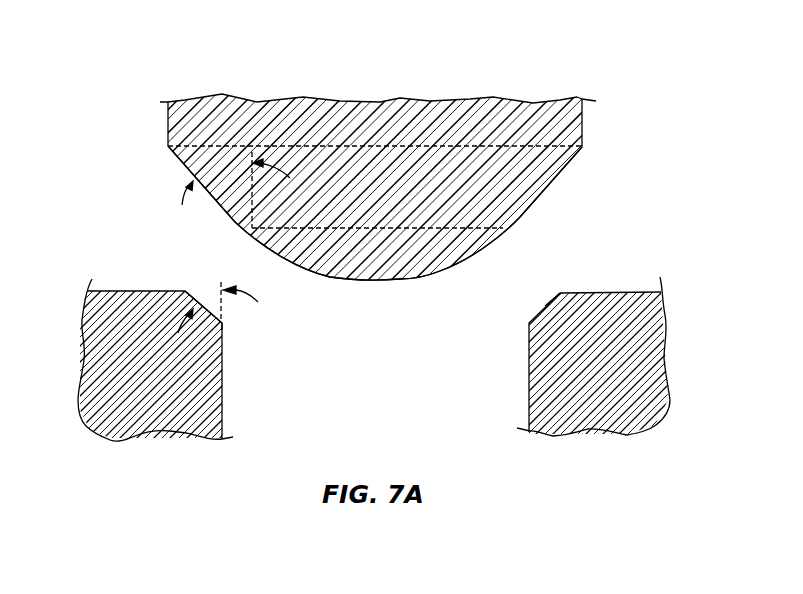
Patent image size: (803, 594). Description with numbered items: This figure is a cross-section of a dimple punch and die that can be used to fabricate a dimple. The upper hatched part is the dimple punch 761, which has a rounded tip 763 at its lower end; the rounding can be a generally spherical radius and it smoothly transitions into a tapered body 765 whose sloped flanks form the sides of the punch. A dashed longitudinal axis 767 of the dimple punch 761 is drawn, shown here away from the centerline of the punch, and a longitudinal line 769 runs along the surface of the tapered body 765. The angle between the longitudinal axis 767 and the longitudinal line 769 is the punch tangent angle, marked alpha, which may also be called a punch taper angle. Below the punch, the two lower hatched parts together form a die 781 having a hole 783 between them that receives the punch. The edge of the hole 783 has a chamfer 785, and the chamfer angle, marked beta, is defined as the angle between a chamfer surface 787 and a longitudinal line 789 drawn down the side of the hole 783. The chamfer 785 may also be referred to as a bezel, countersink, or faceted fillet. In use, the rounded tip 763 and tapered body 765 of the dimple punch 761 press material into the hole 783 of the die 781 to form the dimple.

The dimple punch 761 is at (597, 129).
The rounded tip 763 is at (422, 279).
The tapered body 765 is at (543, 182).
The longitudinal axis 767 is at (251, 208).
The longitudinal line 769 is at (238, 226).
The die 781 is at (115, 272).
The hole 783 is at (437, 423).
The chamfer 785 is at (221, 322).
The chamfer surface 787 is at (198, 292).
The longitudinal line 789 is at (220, 305).